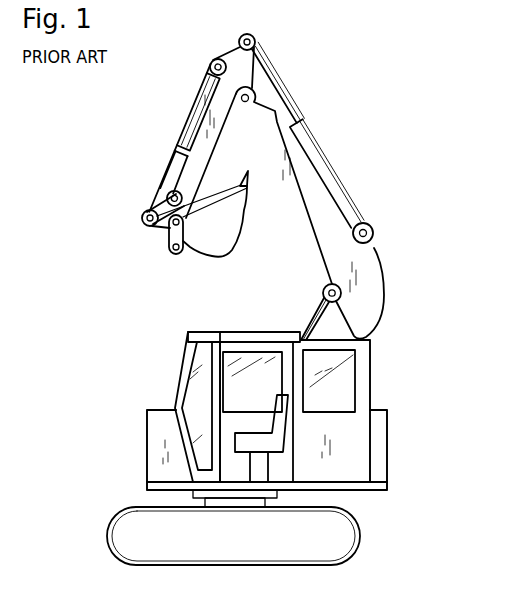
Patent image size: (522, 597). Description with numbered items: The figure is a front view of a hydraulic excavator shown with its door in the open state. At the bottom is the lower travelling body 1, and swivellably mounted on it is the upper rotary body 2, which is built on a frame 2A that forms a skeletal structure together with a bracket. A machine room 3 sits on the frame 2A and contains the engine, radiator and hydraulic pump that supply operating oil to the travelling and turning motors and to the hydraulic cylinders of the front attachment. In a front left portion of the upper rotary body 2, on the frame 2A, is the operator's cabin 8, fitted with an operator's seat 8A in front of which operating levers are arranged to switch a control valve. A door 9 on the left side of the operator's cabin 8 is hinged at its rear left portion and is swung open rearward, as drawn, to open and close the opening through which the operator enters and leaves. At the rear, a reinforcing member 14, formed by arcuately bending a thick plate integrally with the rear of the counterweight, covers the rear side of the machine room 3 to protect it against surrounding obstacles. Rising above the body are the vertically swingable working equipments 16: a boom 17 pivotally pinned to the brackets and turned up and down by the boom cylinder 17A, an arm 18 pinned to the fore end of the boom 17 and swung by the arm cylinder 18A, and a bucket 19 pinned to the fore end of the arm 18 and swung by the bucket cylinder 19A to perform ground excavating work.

The lower travelling body 1 is at (347, 530).
The upper rotary body 2 is at (133, 402).
The frame 2A is at (147, 485).
The machine room 3 is at (150, 438).
The operator's cabin 8 is at (187, 350).
The operator's seat 8A is at (278, 437).
The door 9 is at (362, 368).
The reinforcing member 14 is at (378, 418).
The working equipments 16 is at (320, 108).
The boom 17 is at (367, 274).
The boom cylinder 17A is at (309, 322).
The arm 18 is at (224, 128).
The arm cylinder 18A is at (342, 202).
The bucket 19 is at (221, 240).
The bucket cylinder 19A is at (182, 143).